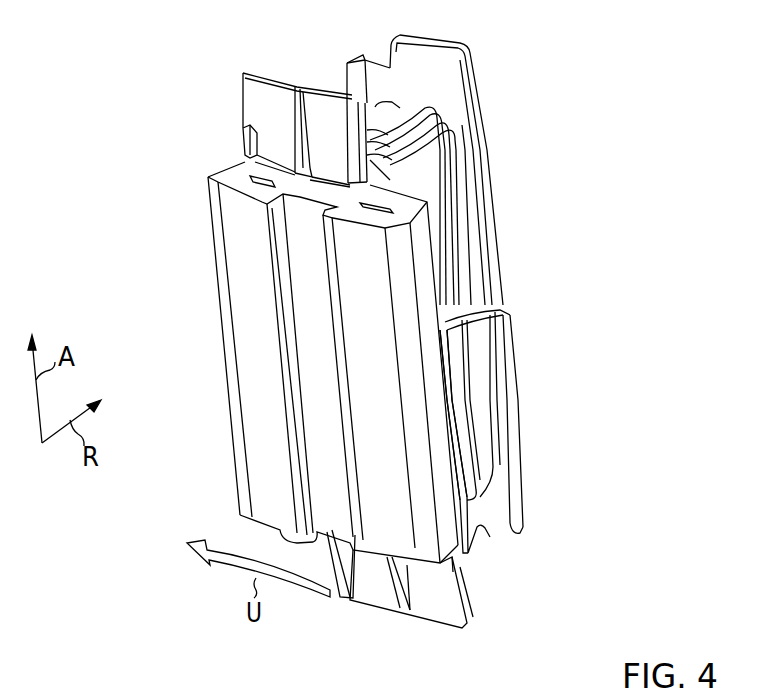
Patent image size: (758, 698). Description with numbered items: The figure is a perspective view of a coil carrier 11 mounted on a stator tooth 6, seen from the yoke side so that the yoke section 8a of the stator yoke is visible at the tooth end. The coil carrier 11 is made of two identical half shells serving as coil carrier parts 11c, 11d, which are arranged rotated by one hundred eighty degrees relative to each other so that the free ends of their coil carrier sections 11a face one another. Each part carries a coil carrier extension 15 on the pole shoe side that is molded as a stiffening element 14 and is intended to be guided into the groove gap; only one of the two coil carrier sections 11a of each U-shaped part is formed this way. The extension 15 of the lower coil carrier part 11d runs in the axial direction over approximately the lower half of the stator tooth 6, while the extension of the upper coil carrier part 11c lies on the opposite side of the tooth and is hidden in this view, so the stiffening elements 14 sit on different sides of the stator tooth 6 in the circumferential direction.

The stator tooth 6 is at (210, 203).
The yoke section 8a is at (317, 357).
The coil carrier 11 is at (268, 110).
The coil carrier section 11a is at (487, 249).
The upper coil carrier part 11c is at (403, 127).
The lower coil carrier part 11d is at (490, 537).
The stiffening element 14 is at (352, 78).
The coil carrier extension 15 is at (510, 357).